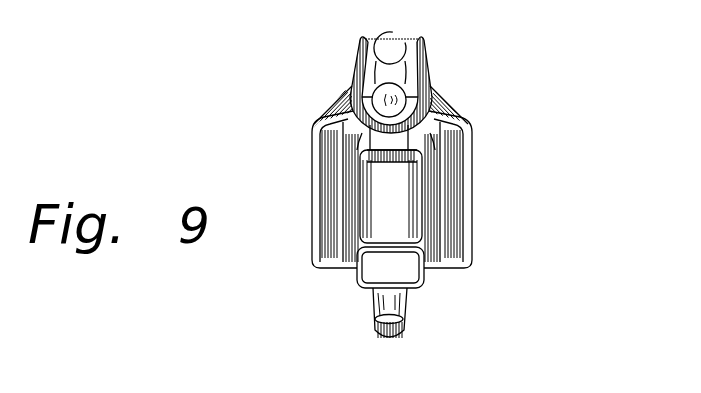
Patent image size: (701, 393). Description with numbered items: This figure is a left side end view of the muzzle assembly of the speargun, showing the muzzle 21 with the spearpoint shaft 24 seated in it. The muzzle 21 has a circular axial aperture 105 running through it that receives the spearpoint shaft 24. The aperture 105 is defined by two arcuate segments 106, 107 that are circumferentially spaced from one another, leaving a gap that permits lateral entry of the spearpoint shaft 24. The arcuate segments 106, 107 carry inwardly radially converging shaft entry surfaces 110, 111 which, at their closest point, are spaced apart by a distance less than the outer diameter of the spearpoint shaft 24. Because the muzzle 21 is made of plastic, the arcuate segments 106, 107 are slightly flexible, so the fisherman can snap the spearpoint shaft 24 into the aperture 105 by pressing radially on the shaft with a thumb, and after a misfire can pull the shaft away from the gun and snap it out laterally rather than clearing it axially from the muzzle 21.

The muzzle 21 is at (483, 192).
The spearpoint shaft 24 is at (356, 88).
The circular axial aperture 105 is at (419, 96).
The arcuate segment 106 is at (355, 75).
The arcuate segment 107 is at (408, 80).
The shaft entry surface 110 is at (367, 36).
The shaft entry surface 111 is at (415, 40).